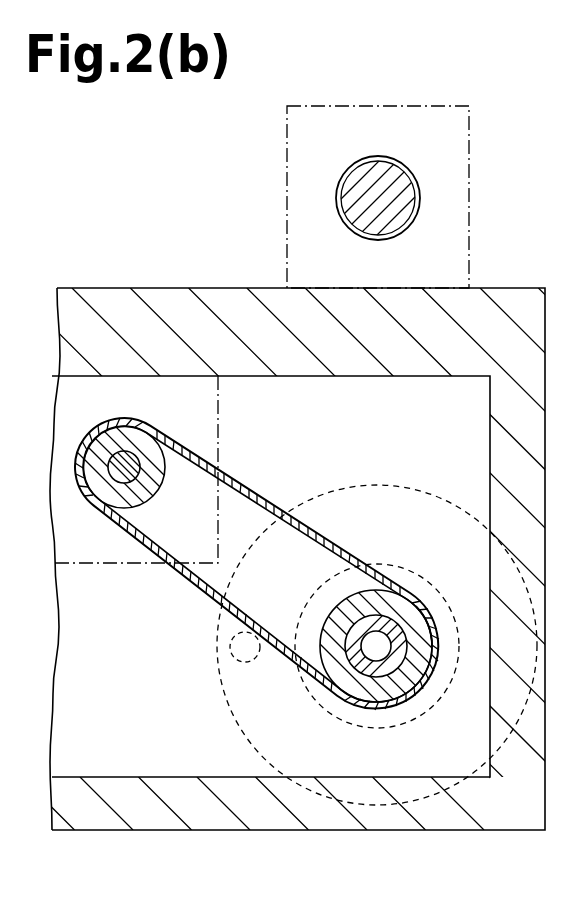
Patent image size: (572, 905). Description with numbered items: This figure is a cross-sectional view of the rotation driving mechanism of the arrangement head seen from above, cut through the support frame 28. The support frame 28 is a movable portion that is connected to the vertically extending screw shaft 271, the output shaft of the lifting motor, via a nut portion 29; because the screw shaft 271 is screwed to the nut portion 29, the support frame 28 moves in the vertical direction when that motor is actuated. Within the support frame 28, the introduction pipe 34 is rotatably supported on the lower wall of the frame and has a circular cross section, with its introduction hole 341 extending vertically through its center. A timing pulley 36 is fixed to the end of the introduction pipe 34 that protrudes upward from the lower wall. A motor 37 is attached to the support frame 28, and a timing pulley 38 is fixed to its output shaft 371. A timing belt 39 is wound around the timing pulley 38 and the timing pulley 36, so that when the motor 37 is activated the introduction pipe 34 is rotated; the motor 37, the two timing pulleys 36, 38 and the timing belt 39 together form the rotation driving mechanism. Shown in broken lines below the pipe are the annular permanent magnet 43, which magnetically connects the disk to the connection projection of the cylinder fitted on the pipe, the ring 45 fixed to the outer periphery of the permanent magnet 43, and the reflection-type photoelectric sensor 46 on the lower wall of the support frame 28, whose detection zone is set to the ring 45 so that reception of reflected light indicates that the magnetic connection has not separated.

The support frame 28 is at (160, 818).
The nut portion 29 is at (287, 229).
The screw shaft 271 is at (350, 188).
The motor 37 is at (220, 400).
The timing pulley 38 is at (103, 446).
The output shaft 371 is at (137, 457).
The timing belt 39 is at (262, 497).
The introduction pipe 34 is at (365, 625).
The introduction hole 341 is at (372, 643).
The timing pulley 36 is at (410, 612).
The permanent magnet 43 is at (308, 697).
The ring 45 is at (220, 680).
The photoelectric sensor 46 is at (229, 647).